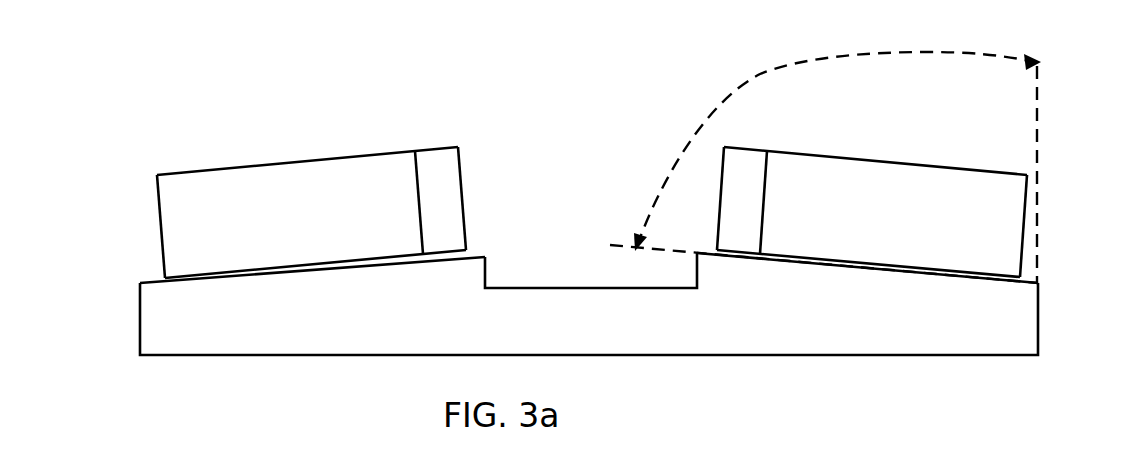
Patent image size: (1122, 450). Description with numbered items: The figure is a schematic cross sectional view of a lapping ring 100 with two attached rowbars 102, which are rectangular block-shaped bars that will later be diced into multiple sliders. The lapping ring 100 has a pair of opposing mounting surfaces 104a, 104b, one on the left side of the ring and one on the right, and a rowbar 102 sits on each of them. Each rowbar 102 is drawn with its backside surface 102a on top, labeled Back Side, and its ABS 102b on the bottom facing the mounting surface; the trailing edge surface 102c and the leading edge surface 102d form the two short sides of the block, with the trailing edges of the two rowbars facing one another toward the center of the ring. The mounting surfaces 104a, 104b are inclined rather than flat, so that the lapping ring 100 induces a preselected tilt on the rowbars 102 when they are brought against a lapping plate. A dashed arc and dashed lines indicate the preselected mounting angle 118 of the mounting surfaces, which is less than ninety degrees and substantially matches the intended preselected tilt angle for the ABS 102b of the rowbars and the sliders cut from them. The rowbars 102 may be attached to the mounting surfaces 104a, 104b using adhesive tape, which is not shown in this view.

The lapping ring 100 is at (872, 347).
The rowbars 102 is at (595, 194).
The backside surface 102a is at (305, 161).
The ABS 102b is at (215, 273).
The trailing edge surface 102c is at (462, 184).
The leading edge surface 102d is at (157, 207).
The mounting surface 104a is at (155, 282).
The mounting surface 104b is at (1035, 282).
The mounting angle 118 is at (758, 75).